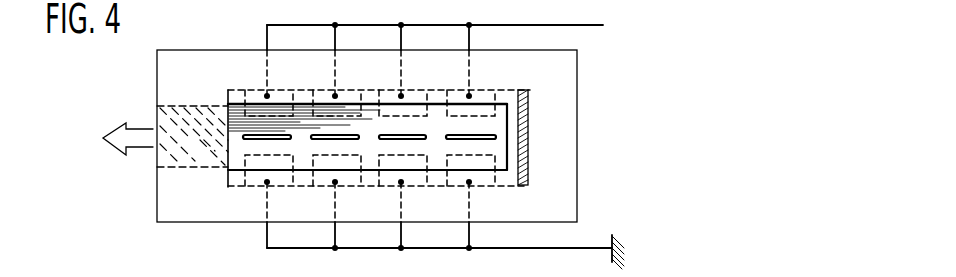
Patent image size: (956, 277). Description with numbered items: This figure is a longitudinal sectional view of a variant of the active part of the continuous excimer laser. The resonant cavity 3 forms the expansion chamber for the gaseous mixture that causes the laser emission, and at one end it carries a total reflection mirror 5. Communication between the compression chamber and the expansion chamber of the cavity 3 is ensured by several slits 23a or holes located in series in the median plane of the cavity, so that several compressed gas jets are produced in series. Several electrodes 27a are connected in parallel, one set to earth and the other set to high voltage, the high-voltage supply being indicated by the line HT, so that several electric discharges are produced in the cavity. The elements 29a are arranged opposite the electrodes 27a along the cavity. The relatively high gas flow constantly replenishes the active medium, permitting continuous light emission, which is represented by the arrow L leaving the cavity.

The resonant cavity 3 is at (513, 183).
The total reflection mirror 5 is at (518, 121).
The slits 23a is at (318, 140).
The electrodes 27a is at (540, 89).
The lower coil end turns 29a is at (485, 180).
The high tension supply line HT is at (453, 55).
The arrow L is at (128, 156).